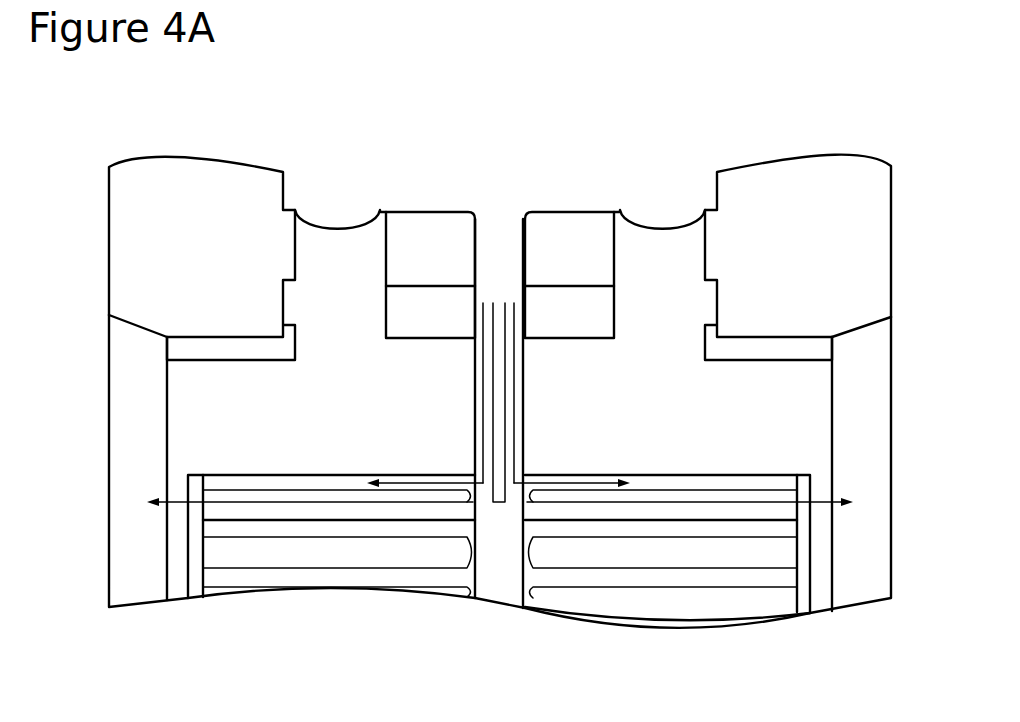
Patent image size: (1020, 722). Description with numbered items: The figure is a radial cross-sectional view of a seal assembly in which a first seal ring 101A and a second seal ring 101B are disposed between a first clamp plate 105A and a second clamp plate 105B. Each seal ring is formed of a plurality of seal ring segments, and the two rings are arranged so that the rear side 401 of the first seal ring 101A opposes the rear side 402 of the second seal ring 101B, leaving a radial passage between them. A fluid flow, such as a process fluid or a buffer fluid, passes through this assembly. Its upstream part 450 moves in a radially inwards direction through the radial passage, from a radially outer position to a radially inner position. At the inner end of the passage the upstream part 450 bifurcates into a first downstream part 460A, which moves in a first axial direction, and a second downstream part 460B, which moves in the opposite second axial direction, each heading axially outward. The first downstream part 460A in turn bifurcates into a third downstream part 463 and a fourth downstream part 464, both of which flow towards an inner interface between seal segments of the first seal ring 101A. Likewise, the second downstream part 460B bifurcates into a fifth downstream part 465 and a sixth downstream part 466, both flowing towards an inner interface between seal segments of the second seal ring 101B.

The first clamp plate 105A is at (258, 170).
The second clamp plate 105B is at (758, 171).
The first seal ring 101A is at (378, 213).
The second seal ring 101B is at (623, 213).
The rear side of the first seal ring 401 is at (477, 323).
The rear side of the second seal ring 402 is at (522, 323).
The upstream part 450 is at (488, 380).
The third downstream part 463 is at (423, 483).
The fourth downstream part 464 is at (282, 502).
The fifth downstream part 465 is at (565, 483).
The sixth downstream part 466 is at (713, 502).
The first downstream part 460A is at (320, 575).
The second downstream part 460B is at (670, 575).